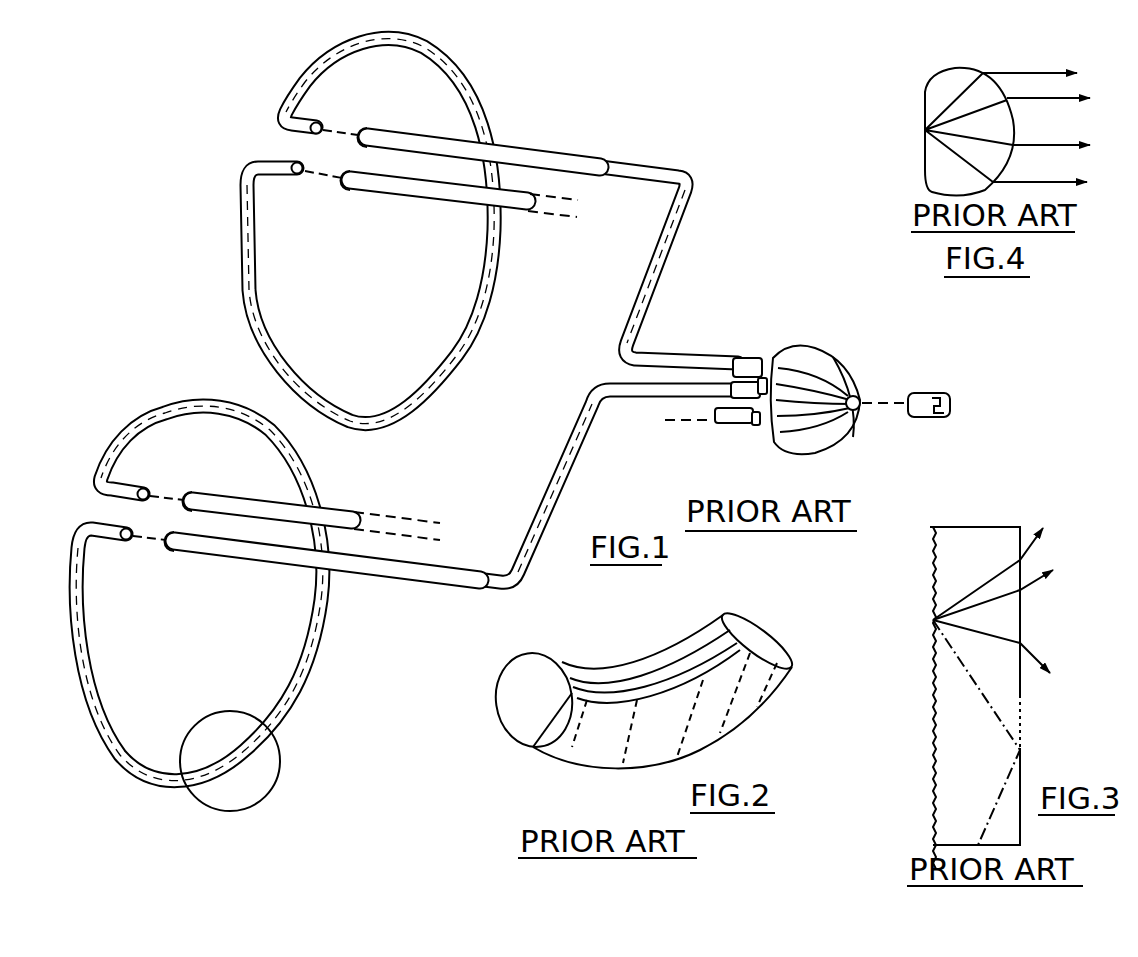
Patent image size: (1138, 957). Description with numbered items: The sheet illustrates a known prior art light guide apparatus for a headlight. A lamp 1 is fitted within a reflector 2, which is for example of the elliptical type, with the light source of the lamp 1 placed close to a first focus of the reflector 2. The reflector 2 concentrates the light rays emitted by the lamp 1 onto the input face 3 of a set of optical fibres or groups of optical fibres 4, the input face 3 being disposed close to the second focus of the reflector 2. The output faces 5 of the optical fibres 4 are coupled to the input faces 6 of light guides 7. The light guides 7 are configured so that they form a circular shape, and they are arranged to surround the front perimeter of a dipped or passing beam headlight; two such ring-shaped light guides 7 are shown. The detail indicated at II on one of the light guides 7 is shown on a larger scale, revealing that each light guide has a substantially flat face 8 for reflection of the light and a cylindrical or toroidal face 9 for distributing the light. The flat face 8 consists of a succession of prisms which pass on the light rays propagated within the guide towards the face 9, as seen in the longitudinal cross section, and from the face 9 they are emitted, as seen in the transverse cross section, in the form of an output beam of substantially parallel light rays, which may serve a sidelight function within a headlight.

In FIG. 1, the lamp 1 is at (922, 392).
In FIG. 1, the reflector 2 is at (833, 365).
In FIG. 1, the input face 3 is at (766, 398).
In FIG. 1, the optical fibres 4 is at (487, 172).
In FIG. 1, the output faces 5 is at (368, 130).
In FIG. 1, the input faces 6 is at (323, 122).
In FIG. 1, the light guides 7 is at (204, 398).
In FIG. 2, the flat face 8 is at (587, 763).
In FIG. 3, the flat face 8 is at (933, 720).
In FIG. 4, the flat face 8 is at (925, 153).
In FIG. 3, the cylindrical or toroidal face 9 is at (1022, 690).
In FIG. 4, the cylindrical or toroidal face 9 is at (1015, 114).
In FIG. 1, the detail II is at (278, 767).